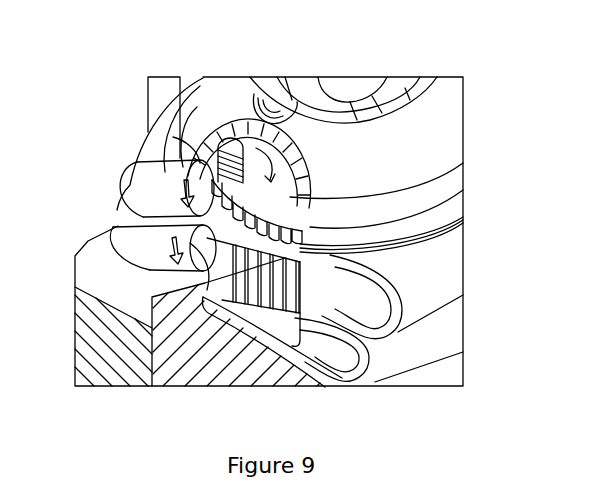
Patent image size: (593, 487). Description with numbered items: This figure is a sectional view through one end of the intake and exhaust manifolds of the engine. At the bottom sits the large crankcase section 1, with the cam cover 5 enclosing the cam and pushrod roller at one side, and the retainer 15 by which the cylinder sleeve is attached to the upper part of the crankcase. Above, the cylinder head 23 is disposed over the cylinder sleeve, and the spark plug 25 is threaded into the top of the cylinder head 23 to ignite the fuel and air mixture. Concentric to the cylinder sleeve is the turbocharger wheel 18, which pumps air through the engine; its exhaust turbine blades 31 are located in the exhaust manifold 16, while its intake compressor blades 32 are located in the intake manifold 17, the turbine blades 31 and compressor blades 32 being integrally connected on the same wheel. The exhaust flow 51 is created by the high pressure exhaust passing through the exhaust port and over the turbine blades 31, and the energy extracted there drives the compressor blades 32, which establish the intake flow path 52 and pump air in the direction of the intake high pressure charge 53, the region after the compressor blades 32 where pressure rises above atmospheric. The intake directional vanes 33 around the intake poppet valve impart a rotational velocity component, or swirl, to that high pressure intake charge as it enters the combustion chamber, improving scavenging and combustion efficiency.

The large crankcase section 1 is at (188, 307).
The cam cover 5 is at (97, 262).
The retainer 15 is at (285, 358).
The exhaust manifold 16 is at (423, 345).
The intake manifold 17 is at (427, 290).
The turbocharger wheel 18 is at (282, 205).
The cylinder head 23 is at (408, 147).
The spark plug 25 is at (266, 96).
The exhaust turbine blade 31 is at (255, 278).
The intake compressor blade 32 is at (197, 147).
The intake directional vane 33 is at (255, 157).
The exhaust flow 51 is at (172, 241).
The intake flow path 52 is at (187, 188).
The intake high pressure charge 53 is at (283, 192).